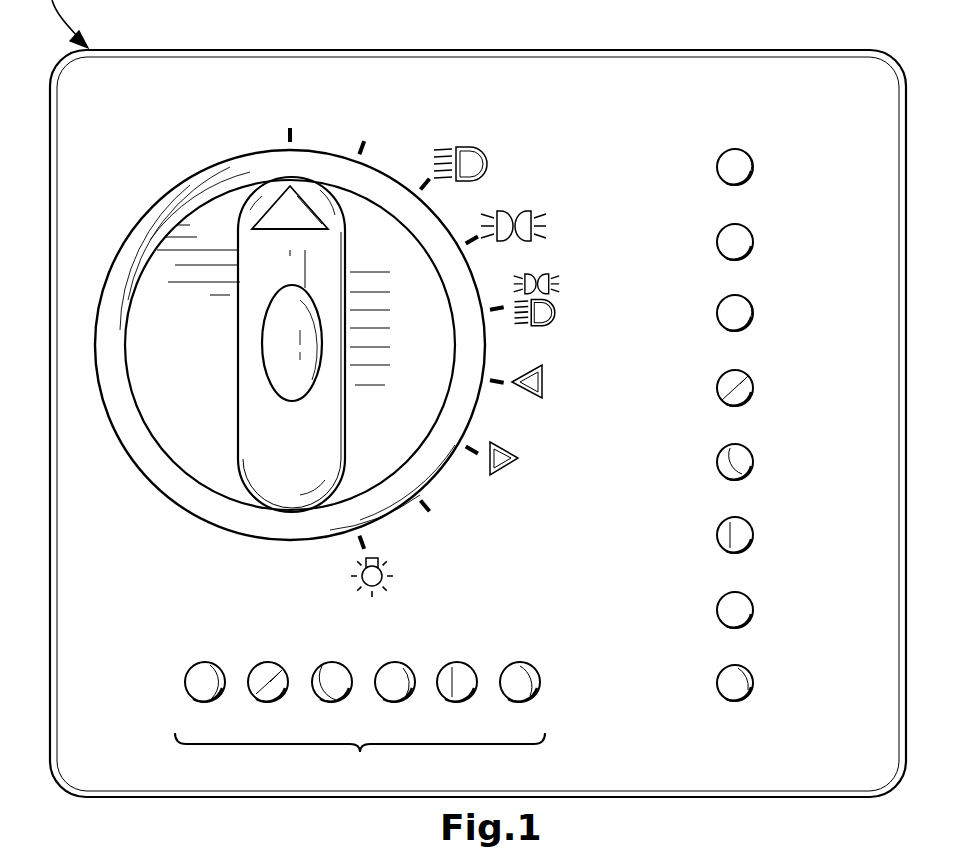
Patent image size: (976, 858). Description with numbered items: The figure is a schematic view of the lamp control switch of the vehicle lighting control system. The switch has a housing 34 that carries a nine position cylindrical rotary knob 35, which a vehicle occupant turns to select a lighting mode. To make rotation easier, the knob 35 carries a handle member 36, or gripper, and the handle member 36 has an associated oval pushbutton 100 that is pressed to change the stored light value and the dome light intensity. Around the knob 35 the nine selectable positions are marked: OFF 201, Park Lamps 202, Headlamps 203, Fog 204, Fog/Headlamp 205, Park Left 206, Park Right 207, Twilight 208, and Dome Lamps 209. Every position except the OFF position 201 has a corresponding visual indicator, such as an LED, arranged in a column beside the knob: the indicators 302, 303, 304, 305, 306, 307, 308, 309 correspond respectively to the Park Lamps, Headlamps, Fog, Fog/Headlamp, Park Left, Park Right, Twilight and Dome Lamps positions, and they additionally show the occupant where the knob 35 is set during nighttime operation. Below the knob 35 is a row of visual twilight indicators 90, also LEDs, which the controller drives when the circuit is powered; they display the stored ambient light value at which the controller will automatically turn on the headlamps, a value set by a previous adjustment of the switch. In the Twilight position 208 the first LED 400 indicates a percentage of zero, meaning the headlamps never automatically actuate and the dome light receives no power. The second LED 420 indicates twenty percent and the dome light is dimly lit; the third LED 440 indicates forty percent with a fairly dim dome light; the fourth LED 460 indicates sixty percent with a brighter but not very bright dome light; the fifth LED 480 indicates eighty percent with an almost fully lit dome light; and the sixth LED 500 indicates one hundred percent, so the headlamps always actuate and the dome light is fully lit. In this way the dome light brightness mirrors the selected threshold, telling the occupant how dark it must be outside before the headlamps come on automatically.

The housing 34 is at (137, 50).
The rotary knob 35 is at (372, 205).
The handle member 36 is at (272, 247).
The oval pushbutton 100 is at (285, 343).
The OFF position 201 is at (313, 97).
The Park Lamps position 202 is at (393, 113).
The Headlamps position 203 is at (490, 158).
The Fog position 204 is at (547, 226).
The Fog/Headlamp position 205 is at (558, 305).
The Park Left position 206 is at (542, 382).
The Park Right position 207 is at (498, 475).
The Twilight position 208 is at (490, 532).
The Dome Lamps position 209 is at (389, 568).
The visual indicator 302 is at (722, 160).
The visual indicator 303 is at (722, 235).
The visual indicator 304 is at (722, 306).
The visual indicator 305 is at (722, 381).
The visual indicator 306 is at (722, 455).
The visual indicator 307 is at (722, 528).
The visual indicator 308 is at (722, 603).
The visual indicator 309 is at (722, 676).
The visual twilight indicators 90 is at (389, 700).
The first LED 400 is at (207, 662).
The second LED 420 is at (268, 662).
The third LED 440 is at (332, 660).
The fourth LED 460 is at (396, 662).
The fifth LED 480 is at (460, 662).
The sixth LED 500 is at (524, 663).